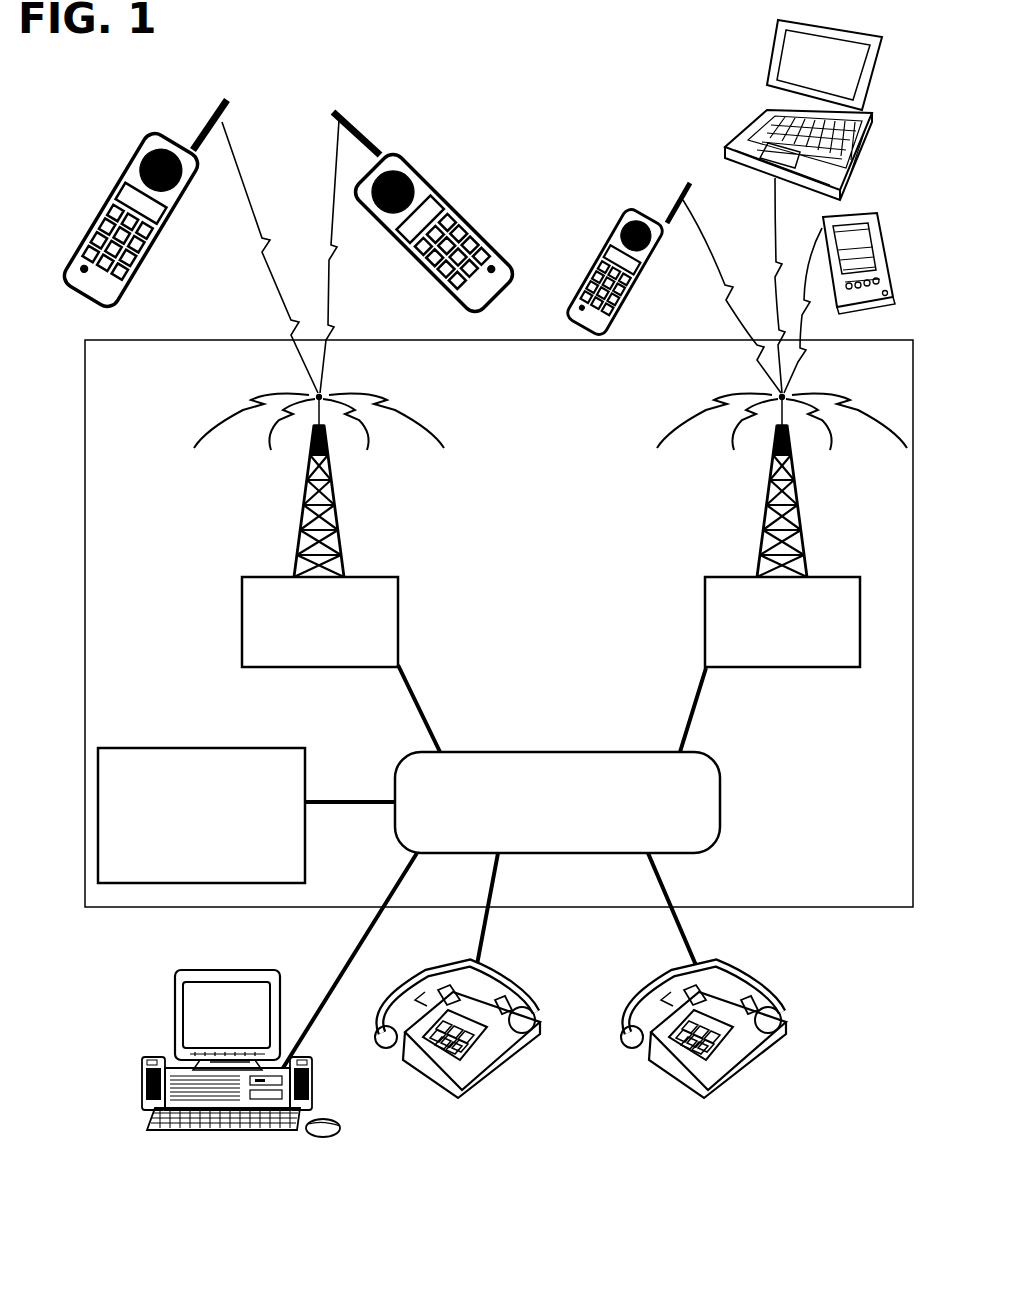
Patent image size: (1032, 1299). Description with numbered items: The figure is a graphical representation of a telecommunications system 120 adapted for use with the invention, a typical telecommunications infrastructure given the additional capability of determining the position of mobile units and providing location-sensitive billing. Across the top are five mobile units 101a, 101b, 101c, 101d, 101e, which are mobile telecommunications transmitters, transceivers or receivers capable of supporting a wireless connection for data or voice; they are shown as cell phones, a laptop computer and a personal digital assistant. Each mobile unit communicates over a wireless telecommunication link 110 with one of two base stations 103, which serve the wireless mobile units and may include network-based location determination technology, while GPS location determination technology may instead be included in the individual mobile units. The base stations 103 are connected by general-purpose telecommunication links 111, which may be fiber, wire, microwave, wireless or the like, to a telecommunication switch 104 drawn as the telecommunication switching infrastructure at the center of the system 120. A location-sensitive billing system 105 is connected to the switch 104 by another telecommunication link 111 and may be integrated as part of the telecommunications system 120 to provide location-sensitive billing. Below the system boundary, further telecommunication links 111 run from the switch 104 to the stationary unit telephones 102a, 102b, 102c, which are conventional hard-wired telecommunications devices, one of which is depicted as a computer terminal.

The mobile unit 101a is at (143, 205).
The mobile unit 101b is at (425, 214).
The mobile unit 101c is at (627, 259).
The mobile unit 101d is at (803, 110).
The mobile unit 101e is at (879, 252).
The wireless telecommunication link 110 is at (543, 256).
The base station 103 is at (550, 530).
The telecommunication switch 104 is at (557, 790).
The location-sensitive billing system 105 is at (201, 804).
The general-purpose telecommunication link 111 is at (520, 866).
The telecommunications system 120 is at (499, 642).
The stationary unit telephone 102a is at (466, 1030).
The stationary unit telephone 102b is at (715, 1031).
The stationary unit telephone 102c is at (230, 1053).